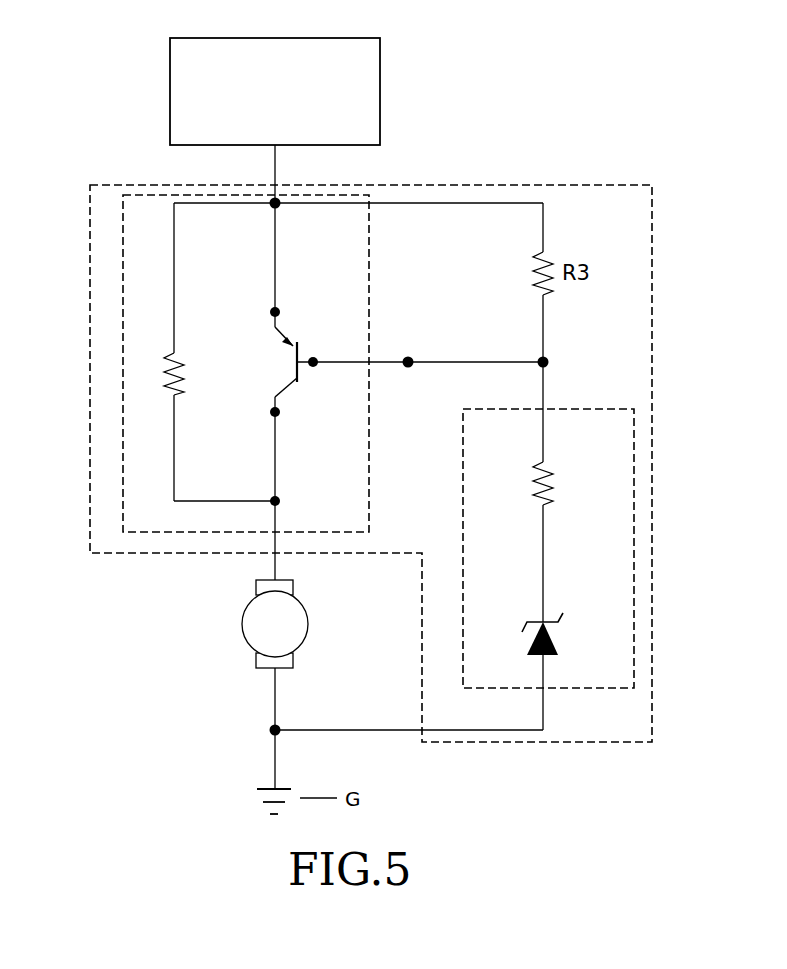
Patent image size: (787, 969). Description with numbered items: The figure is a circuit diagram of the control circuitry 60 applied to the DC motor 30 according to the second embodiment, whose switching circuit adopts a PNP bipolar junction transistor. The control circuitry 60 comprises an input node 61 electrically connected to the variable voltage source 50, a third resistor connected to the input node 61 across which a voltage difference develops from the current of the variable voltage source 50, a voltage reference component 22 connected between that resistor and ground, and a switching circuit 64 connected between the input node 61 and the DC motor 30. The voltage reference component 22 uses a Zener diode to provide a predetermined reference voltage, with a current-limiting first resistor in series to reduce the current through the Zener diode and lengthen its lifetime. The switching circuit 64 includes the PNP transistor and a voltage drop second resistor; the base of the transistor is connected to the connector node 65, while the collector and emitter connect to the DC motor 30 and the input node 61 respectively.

The variable voltage source 50 is at (380, 92).
The control circuitry 60 is at (592, 220).
The input node 61 is at (272, 201).
The switching circuit 64 is at (143, 263).
The connector node 65 is at (406, 345).
The voltage reference component 22 is at (592, 437).
The DC motor 30 is at (242, 625).